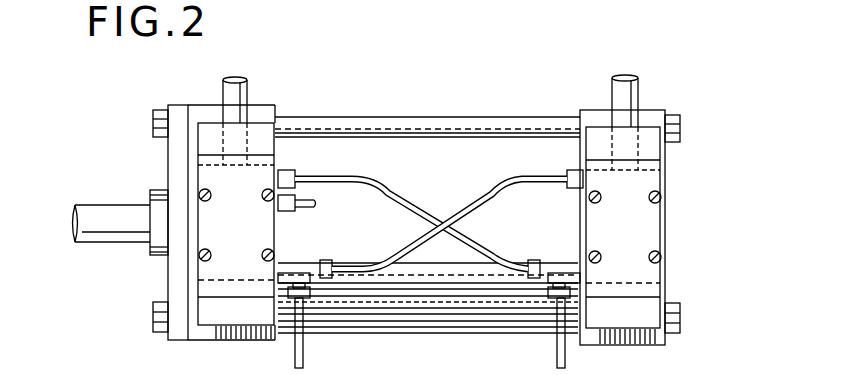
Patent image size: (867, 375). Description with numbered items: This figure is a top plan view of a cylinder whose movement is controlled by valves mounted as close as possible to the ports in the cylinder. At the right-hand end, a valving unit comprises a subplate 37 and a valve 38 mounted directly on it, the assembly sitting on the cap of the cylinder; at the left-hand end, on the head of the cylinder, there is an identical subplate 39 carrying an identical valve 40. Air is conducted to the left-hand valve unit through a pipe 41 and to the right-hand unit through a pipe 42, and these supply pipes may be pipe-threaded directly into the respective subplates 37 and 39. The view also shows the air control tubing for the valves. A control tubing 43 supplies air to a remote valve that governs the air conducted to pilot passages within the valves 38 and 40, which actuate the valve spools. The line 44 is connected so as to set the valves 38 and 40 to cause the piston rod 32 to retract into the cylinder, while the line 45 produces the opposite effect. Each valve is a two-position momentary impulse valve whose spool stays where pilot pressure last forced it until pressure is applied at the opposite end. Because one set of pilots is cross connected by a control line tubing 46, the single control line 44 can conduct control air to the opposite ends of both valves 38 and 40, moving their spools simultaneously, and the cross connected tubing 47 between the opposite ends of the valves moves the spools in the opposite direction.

The piston rod 32 is at (100, 233).
The subplate 37 is at (642, 280).
The valve 38 is at (650, 153).
The subplate 39 is at (200, 279).
The valve 40 is at (208, 138).
The pipe 41 is at (248, 95).
The pipe 42 is at (636, 86).
The control tubing 43 is at (312, 205).
The line 44 is at (304, 355).
The line 45 is at (556, 345).
The control line tubing 46 is at (410, 250).
The cross connected tubing 47 is at (396, 197).